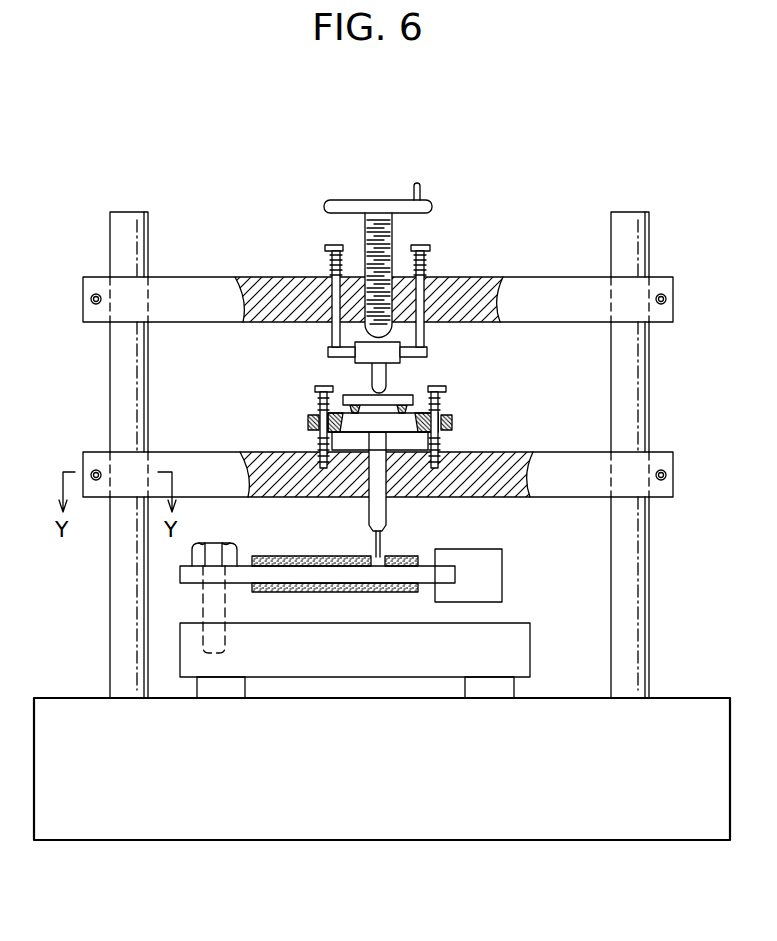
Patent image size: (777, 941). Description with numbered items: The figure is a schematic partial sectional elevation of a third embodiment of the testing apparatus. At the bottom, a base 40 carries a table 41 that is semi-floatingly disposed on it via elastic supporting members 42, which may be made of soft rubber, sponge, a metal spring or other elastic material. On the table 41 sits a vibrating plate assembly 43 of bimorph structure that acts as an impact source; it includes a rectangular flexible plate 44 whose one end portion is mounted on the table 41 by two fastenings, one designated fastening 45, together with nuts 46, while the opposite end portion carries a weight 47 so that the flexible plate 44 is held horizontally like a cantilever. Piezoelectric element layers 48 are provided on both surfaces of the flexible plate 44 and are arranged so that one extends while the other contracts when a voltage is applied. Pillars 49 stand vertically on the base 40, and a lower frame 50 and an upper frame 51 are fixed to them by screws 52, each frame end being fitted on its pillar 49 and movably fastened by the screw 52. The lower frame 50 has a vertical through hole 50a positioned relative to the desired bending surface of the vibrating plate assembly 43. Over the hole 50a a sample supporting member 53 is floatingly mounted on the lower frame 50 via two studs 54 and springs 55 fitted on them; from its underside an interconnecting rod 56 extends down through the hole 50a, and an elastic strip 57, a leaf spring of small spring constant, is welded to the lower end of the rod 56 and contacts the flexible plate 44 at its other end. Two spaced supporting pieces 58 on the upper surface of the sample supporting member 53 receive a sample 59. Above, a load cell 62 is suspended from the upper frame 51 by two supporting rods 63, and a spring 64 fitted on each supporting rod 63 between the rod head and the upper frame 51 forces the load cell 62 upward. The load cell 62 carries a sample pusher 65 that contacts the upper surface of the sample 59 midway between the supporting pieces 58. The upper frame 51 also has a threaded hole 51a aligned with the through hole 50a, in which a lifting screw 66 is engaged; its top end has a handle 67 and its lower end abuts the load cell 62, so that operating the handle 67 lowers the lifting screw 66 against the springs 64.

The base 40 is at (378, 845).
The table 41 is at (505, 655).
The elastic supporting members 42 is at (221, 700).
The vibrating plate assembly 43 is at (310, 600).
The flexible plate 44 is at (423, 573).
The fastening 45 is at (212, 603).
The nuts 46 is at (188, 553).
The weight 47 is at (475, 580).
The piezoelectric element layers 48 is at (300, 556).
The pillars 49 is at (125, 378).
The lower frame 50 is at (578, 475).
The vertical through hole 50a is at (440, 487).
The upper frame 51 is at (578, 300).
The threaded hole 51a is at (425, 277).
The screws 52 is at (90, 299).
The sample supporting member 53 is at (455, 425).
The studs 54 is at (318, 389).
The springs 55 is at (323, 450).
The interconnecting rod 56 is at (372, 525).
The elastic strip 57 is at (380, 552).
The supporting pieces 58 is at (318, 383).
The sample 59 is at (368, 400).
The load cell 62 is at (385, 350).
The supporting rods 63 is at (330, 248).
The spring 64 is at (333, 265).
The sample pusher 65 is at (430, 352).
The lifting screw 66 is at (388, 280).
The handle 67 is at (345, 207).